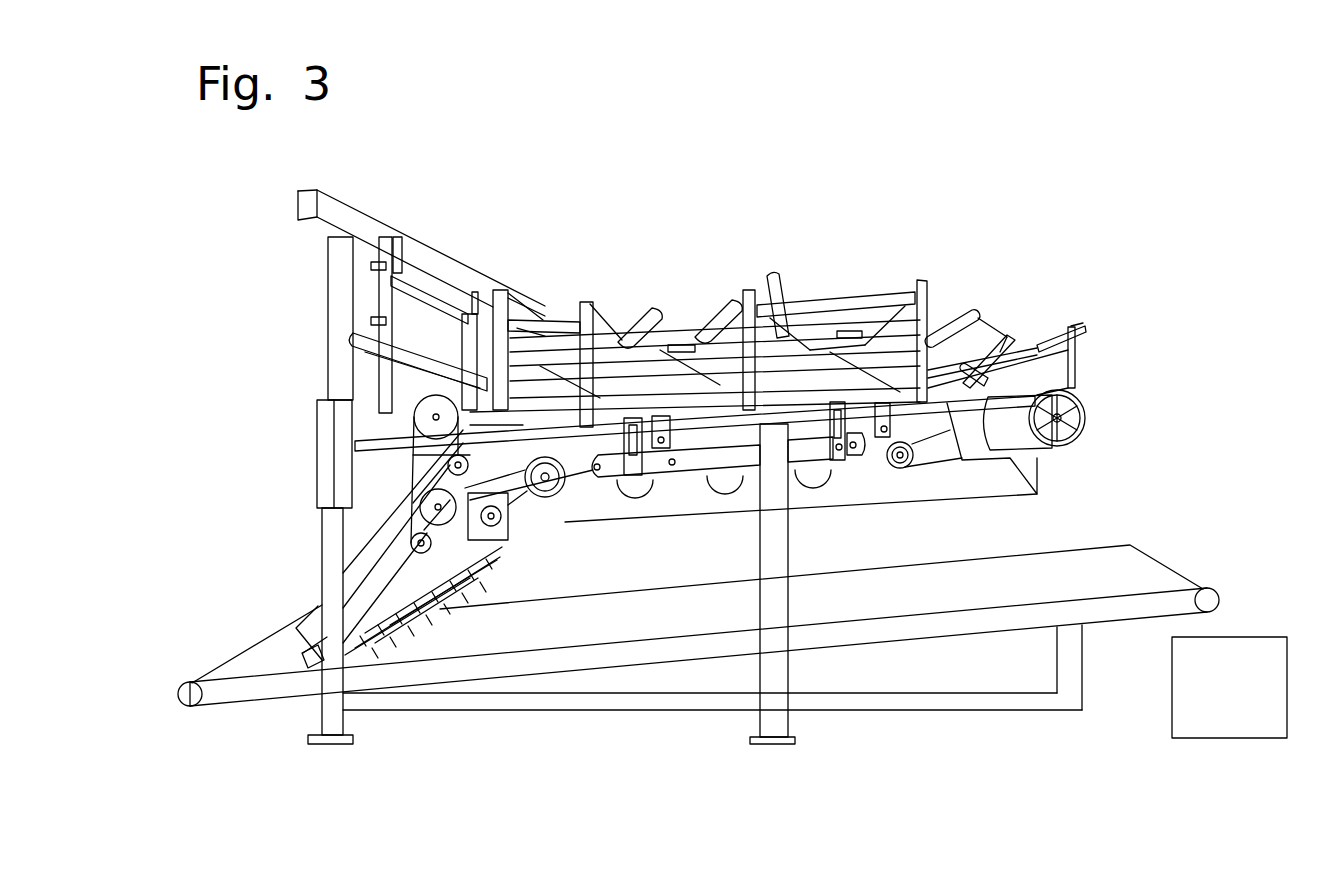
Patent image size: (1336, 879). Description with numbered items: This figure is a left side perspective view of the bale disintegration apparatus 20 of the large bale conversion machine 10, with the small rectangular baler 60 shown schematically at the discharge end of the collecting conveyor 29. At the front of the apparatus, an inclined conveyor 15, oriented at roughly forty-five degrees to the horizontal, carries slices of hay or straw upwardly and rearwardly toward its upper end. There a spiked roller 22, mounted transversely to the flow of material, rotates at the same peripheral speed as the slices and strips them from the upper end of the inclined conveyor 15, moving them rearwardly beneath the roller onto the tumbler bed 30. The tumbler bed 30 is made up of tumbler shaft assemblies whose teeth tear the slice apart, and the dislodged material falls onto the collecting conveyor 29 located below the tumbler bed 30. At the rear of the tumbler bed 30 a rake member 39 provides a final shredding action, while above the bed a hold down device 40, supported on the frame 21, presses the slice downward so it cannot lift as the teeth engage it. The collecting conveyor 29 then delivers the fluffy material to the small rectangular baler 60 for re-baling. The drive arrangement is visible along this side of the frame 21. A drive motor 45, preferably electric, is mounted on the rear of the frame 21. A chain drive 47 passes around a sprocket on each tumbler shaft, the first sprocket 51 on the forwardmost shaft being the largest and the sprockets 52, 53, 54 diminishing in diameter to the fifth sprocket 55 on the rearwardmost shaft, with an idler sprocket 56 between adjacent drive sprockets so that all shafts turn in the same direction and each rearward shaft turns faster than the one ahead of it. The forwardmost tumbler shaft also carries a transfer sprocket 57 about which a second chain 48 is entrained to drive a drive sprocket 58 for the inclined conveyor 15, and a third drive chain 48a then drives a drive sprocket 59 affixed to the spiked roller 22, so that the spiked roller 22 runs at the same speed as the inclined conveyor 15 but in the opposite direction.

The large bale conversion machine 10 is at (740, 210).
The inclined conveyor 15 is at (387, 613).
The bale disintegration apparatus 20 is at (893, 280).
The frame 21 is at (345, 270).
The spiked roller 22 is at (355, 327).
The collecting conveyor 29 is at (708, 595).
The tumbler bed 30 is at (698, 571).
The rake member 39 is at (947, 308).
The hold down device 40 is at (677, 308).
The drive motor 45 is at (1084, 396).
The chain drive 47 is at (790, 430).
The second chain 48 is at (527, 507).
The third drive chain 48a is at (410, 455).
The first sprocket 51 is at (548, 495).
The sprocket 52 is at (647, 488).
The sprocket 53 is at (733, 478).
The sprocket 54 is at (813, 470).
The fifth sprocket 55 is at (913, 467).
The idler sprocket 56 is at (858, 452).
The transfer sprocket 57 is at (540, 498).
The drive sprocket 58 is at (420, 512).
The drive sprocket 59 is at (412, 412).
The small rectangular baler 60 is at (1188, 730).